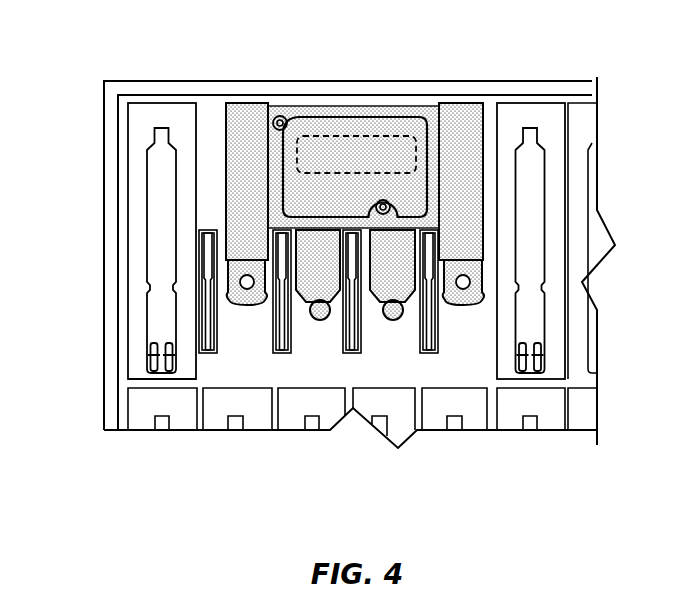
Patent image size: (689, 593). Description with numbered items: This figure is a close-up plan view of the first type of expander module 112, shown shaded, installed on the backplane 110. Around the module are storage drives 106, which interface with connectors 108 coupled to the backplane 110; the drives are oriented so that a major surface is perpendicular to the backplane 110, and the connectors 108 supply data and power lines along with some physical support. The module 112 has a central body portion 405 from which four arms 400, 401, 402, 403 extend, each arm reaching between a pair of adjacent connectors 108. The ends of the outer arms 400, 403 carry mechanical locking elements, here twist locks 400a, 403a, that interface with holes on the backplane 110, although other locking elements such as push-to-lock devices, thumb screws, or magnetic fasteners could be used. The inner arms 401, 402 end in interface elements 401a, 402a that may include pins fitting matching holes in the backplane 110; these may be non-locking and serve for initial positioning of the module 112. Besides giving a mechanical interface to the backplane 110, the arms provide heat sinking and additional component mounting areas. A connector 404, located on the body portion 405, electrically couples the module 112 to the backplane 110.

The storage drive 106 is at (137, 153).
The connector 108 is at (210, 358).
The backplane 110 is at (215, 377).
The expander module 112 is at (282, 114).
The outer arm 400 is at (257, 163).
The twist lock 400a is at (238, 305).
The inner arm 401 is at (336, 246).
The interface element 401a is at (320, 320).
The inner arm 402 is at (409, 246).
The interface element 402a is at (393, 320).
The outer arm 403 is at (476, 170).
The twist lock 403a is at (465, 305).
The connector 404 is at (355, 135).
The body portion 405 is at (432, 125).